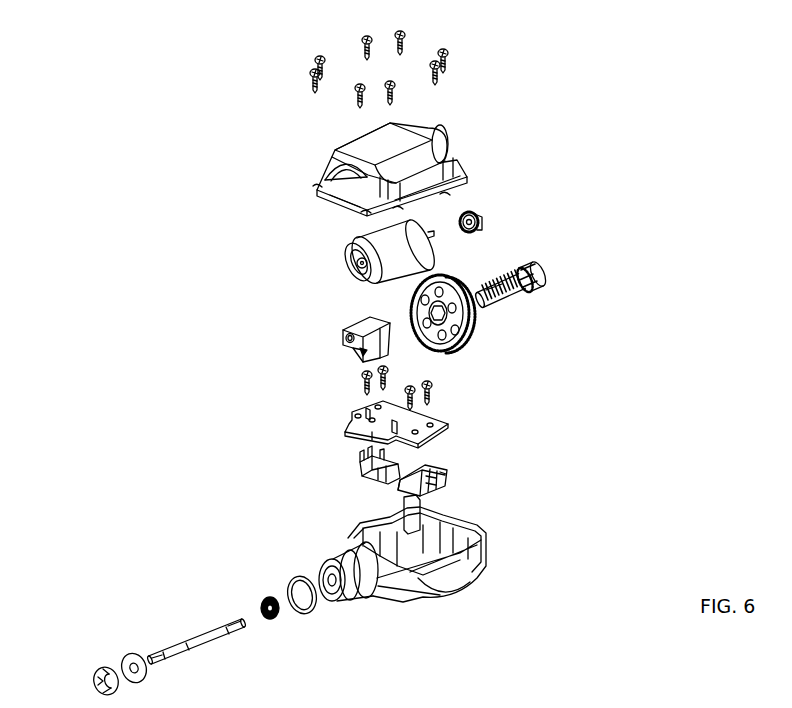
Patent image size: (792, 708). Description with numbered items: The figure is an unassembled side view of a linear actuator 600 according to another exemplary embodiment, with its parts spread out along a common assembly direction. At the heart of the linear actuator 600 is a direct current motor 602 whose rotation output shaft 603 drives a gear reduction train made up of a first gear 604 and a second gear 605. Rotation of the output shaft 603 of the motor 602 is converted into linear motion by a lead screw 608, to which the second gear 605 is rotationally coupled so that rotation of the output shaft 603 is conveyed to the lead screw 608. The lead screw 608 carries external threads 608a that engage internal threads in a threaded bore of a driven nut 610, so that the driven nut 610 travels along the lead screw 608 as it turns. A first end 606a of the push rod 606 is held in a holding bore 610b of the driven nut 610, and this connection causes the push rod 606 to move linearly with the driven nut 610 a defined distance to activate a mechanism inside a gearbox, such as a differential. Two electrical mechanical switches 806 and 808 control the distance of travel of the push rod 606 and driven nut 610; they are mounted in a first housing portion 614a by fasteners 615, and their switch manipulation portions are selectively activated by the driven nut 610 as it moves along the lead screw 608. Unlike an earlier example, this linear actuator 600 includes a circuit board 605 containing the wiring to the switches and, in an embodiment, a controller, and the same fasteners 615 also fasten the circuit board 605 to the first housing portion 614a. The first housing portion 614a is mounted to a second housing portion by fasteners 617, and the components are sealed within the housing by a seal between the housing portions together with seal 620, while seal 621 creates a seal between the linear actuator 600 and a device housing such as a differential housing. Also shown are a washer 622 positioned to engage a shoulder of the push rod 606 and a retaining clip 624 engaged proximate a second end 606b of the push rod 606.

The linear actuator 600 is at (667, 165).
The direct current motor 602 is at (338, 242).
The rotation output shaft 603 is at (434, 234).
The first gear 604 is at (482, 228).
The second gear 605 is at (474, 338).
The push rod 606 is at (208, 642).
The first end of push rod 606a is at (233, 618).
The second end of push rod 606b is at (162, 665).
The lead screw 608 is at (520, 290).
The external threads 608a is at (498, 302).
The driven nut 610 is at (358, 323).
The holding bore 610b is at (352, 337).
The first housing portion 614a is at (372, 137).
The fasteners 615 is at (432, 388).
The fasteners 617 is at (360, 41).
The seal 620 is at (277, 620).
The seal 621 is at (290, 578).
The washer 622 is at (127, 655).
The retaining clip 624 is at (92, 676).
The electrical mechanical switch 806 is at (358, 470).
The electrical mechanical switch 808 is at (447, 476).